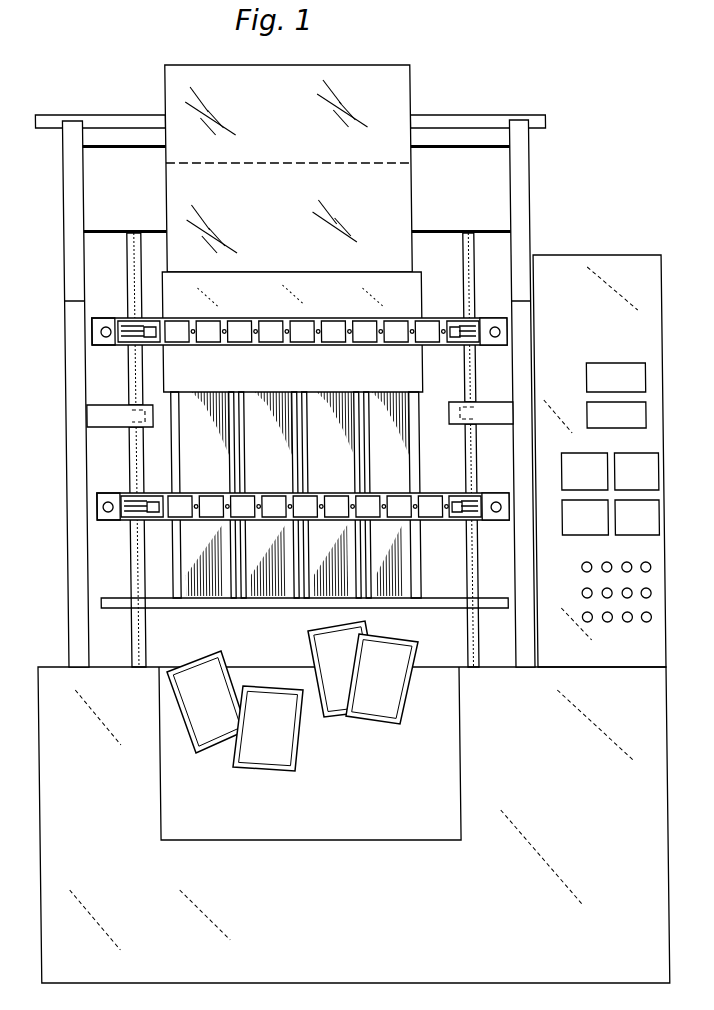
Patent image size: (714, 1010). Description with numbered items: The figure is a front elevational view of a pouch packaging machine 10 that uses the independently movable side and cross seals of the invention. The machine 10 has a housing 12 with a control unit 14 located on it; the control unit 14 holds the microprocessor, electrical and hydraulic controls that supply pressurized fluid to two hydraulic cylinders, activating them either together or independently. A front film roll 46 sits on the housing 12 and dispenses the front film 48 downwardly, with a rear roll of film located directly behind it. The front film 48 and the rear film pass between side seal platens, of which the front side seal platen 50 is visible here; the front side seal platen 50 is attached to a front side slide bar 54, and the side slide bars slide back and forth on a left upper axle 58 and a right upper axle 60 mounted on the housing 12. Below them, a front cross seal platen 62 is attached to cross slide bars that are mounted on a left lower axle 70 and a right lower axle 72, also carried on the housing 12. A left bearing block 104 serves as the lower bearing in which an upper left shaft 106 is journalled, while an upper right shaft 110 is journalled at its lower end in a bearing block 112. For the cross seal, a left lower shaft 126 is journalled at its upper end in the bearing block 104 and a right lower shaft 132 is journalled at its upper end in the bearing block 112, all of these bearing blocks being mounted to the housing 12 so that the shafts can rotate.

The pouch packaging machine 10 is at (554, 196).
The housing 12 is at (572, 152).
The control unit 14 is at (584, 293).
The front film roll 46 is at (265, 63).
The front film 48 is at (406, 186).
The front side seal platen 50 is at (412, 288).
The front side slide bar 54 is at (173, 347).
The left upper axle 58 is at (105, 333).
The right upper axle 60 is at (506, 332).
The front cross seal platen 62 is at (398, 522).
The left lower axle 70 is at (108, 513).
The right lower axle 72 is at (500, 500).
The left bearing block 104 is at (115, 416).
The shaft 106 is at (128, 285).
The upper right shaft 110 is at (472, 286).
The bearing block 112 is at (496, 405).
The left lower shaft 126 is at (133, 557).
The right lower shaft 132 is at (475, 567).